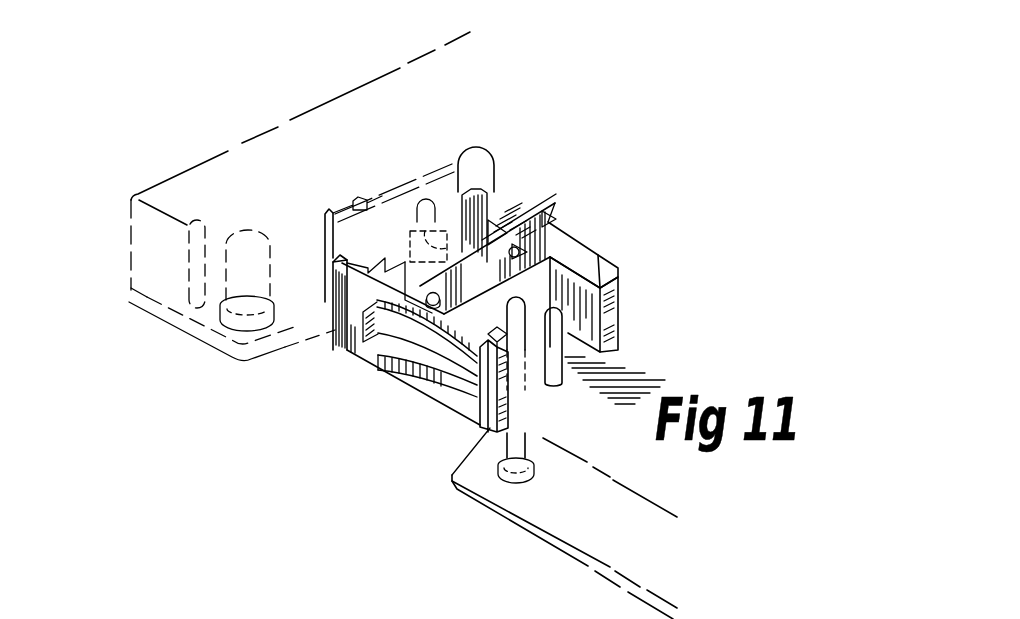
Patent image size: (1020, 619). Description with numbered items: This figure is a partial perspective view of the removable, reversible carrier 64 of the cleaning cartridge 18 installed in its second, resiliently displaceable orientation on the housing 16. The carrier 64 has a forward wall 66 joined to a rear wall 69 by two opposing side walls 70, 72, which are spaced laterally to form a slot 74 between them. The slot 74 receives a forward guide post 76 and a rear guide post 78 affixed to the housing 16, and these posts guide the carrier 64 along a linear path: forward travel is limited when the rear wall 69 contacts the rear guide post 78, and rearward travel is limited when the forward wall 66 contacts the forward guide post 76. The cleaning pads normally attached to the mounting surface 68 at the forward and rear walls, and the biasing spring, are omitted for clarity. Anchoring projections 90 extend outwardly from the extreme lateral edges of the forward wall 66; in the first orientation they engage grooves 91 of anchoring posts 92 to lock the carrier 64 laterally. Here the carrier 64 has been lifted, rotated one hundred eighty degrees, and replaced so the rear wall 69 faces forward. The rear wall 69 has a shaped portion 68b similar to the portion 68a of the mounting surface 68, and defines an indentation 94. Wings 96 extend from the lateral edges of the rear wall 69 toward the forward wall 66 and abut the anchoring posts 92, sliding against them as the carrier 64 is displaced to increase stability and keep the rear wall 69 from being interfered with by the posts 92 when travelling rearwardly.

The housing 16 is at (482, 494).
The cartridge 18 is at (305, 90).
The carrier 64 is at (572, 162).
The forward wall 66 is at (513, 246).
The mounting surface 68 is at (628, 272).
The shaped portion of mounting surface 68a is at (578, 248).
The shaped portion of rear wall 68b is at (412, 420).
The rear wall 69 is at (366, 310).
The side wall 70 is at (588, 250).
The side wall 72 is at (480, 255).
The slot 74 is at (472, 284).
The forward guide post 76 is at (432, 297).
The rear guide post 78 is at (530, 216).
The anchoring projections 90 is at (482, 281).
The grooves 91 is at (341, 256).
The anchoring posts 92 is at (338, 325).
The indentation 94 is at (358, 356).
The wings 96 is at (381, 263).